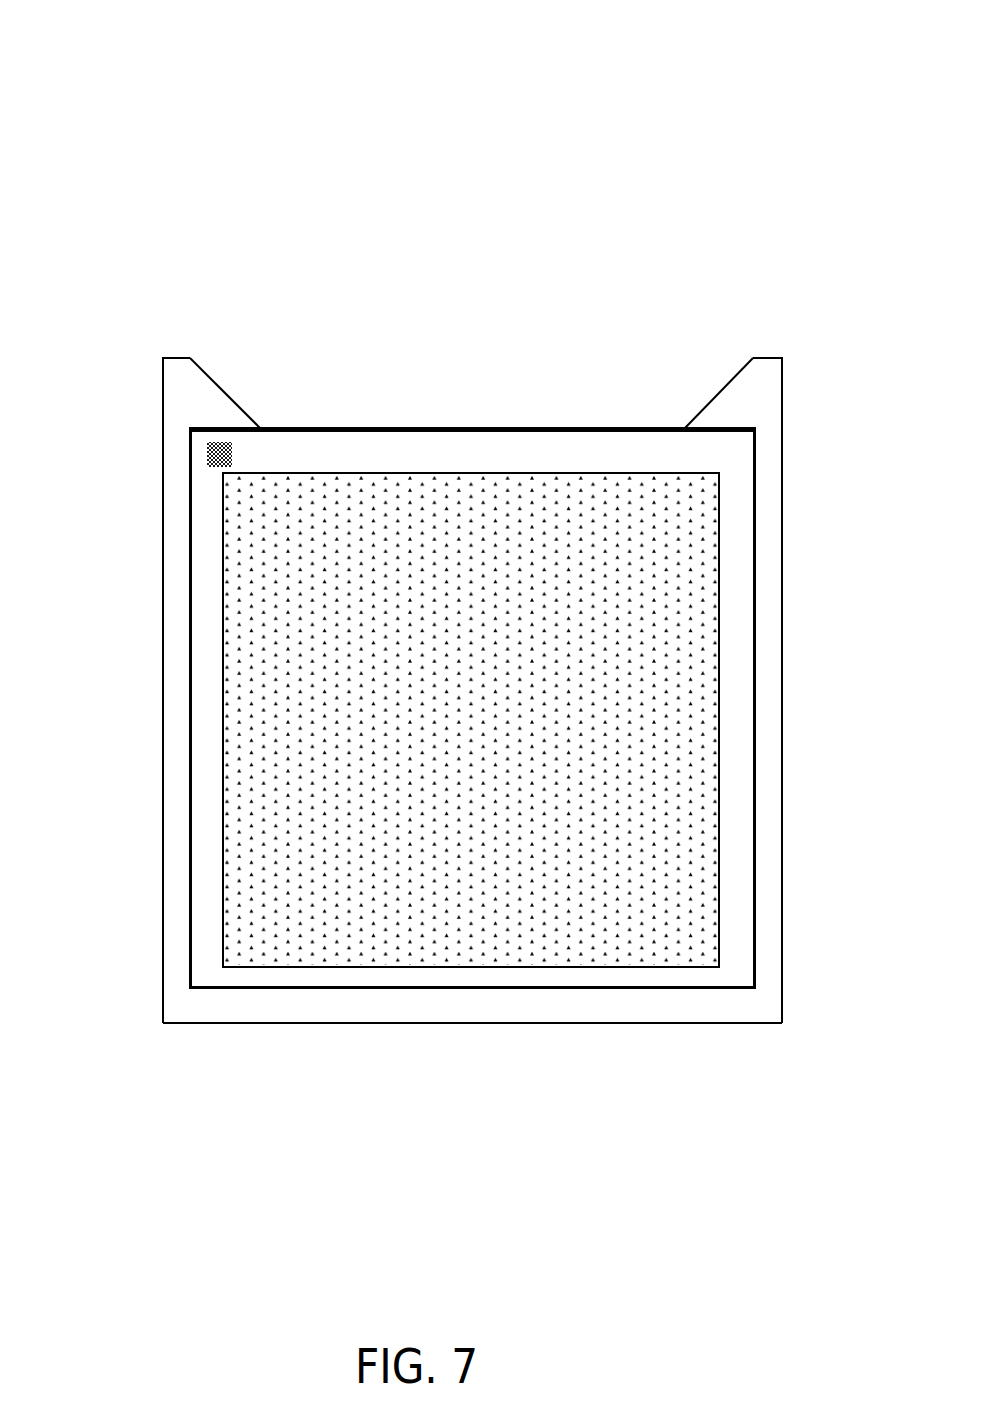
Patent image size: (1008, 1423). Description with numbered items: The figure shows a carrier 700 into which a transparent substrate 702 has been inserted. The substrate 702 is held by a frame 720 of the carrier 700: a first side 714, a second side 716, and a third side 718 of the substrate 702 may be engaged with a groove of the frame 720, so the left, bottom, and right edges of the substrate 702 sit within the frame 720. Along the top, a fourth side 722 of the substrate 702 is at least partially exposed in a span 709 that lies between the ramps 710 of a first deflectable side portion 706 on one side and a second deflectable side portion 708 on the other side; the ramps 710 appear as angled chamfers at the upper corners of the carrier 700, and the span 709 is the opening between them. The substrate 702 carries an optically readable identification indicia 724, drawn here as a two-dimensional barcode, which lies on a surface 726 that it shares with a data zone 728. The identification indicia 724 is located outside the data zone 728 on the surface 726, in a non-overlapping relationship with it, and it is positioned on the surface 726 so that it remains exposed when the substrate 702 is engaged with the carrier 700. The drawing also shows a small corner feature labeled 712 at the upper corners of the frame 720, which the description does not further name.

The carrier 700 is at (72, 115).
The substrate 702 is at (513, 462).
The first deflectable side portion 706 is at (177, 675).
The second deflectable side portion 708 is at (763, 627).
The span 709 is at (462, 375).
The ramps 710 is at (217, 383).
The frame corner 712 is at (245, 432).
The first side 714 is at (190, 832).
The second side 716 is at (401, 985).
The third side 718 is at (753, 748).
The frame 720 is at (495, 1003).
The fourth side 722 is at (347, 428).
The optically readable identification indicia 724 is at (207, 457).
The surface 726 is at (434, 466).
The data zone 728 is at (532, 621).